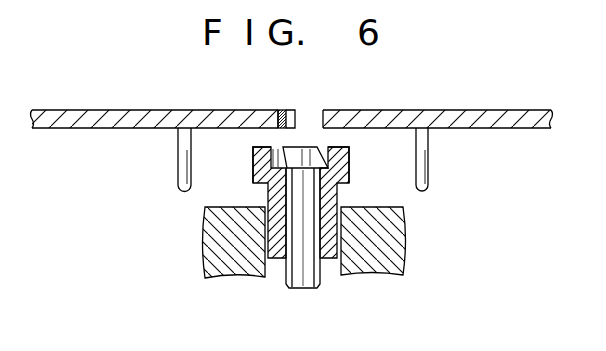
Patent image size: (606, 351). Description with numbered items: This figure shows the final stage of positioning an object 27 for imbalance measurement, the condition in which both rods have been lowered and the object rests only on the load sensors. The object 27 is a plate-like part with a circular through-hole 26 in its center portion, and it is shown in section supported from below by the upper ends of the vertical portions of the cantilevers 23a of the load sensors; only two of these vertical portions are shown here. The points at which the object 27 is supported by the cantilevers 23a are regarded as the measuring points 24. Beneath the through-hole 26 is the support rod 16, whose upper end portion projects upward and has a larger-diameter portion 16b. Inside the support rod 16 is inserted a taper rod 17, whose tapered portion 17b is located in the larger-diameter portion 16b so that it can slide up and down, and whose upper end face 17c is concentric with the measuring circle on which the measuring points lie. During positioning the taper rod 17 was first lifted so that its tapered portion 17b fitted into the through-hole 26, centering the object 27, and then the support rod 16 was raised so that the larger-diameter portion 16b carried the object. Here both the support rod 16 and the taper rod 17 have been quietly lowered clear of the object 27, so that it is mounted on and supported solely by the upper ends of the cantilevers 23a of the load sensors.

The support rod 16 is at (338, 197).
The larger-diameter portion 16b is at (350, 161).
The taper rod 17 is at (302, 281).
The tapered portion 17b is at (287, 147).
The upper end face 17c is at (299, 146).
The cantilever 23a is at (177, 176).
The measuring points 24 is at (183, 128).
The through-hole 26 is at (322, 121).
The object 27 is at (490, 115).